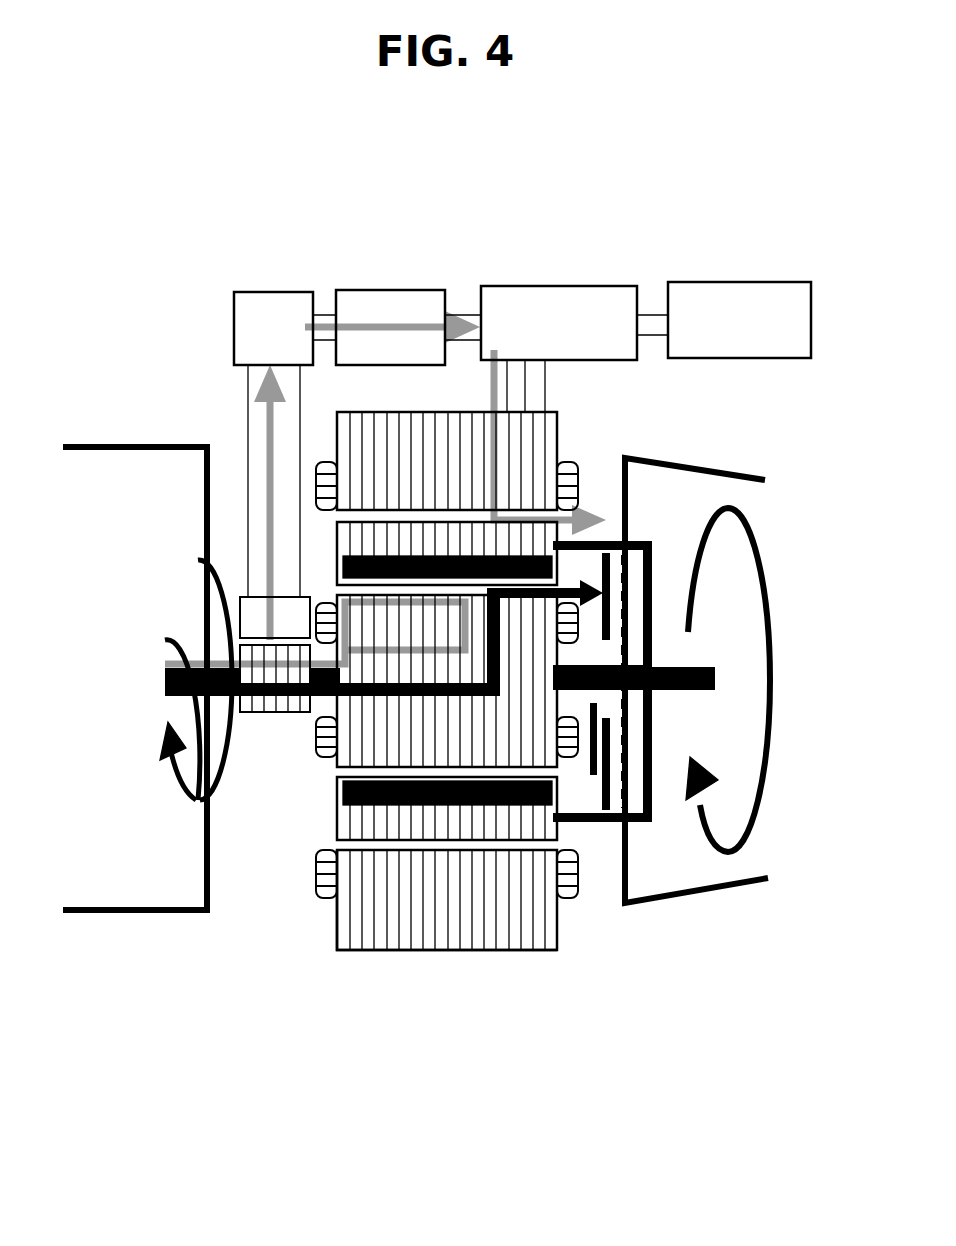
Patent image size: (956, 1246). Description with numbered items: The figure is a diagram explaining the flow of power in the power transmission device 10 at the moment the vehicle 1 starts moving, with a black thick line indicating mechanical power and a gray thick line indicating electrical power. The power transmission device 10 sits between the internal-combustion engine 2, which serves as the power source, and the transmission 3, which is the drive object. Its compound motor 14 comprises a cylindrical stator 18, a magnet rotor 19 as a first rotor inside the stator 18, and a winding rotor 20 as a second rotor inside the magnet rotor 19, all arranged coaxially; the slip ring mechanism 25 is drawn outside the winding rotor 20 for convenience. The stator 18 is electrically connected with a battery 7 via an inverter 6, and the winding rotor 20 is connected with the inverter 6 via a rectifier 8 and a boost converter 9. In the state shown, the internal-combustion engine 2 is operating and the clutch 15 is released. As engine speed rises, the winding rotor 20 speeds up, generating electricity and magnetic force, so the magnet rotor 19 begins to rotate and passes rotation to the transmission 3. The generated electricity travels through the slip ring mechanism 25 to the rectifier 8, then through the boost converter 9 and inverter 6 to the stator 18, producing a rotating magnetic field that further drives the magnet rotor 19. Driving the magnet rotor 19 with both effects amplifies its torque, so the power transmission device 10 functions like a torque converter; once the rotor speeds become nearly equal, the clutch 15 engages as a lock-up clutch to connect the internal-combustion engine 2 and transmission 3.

The vehicle 1 is at (138, 190).
The internal-combustion engine 2 is at (113, 915).
The transmission 3 is at (700, 900).
The inverter 6 is at (565, 285).
The battery 7 is at (745, 282).
The rectifier 8 is at (271, 292).
The boost converter 9 is at (396, 290).
The power transmission device 10 is at (424, 1106).
The compound motor 14 is at (443, 968).
The clutch 15 is at (604, 826).
The stator 18 is at (352, 952).
The magnet rotor 19 is at (343, 820).
The winding rotor 20 is at (343, 770).
The slip ring mechanism 25 is at (282, 725).